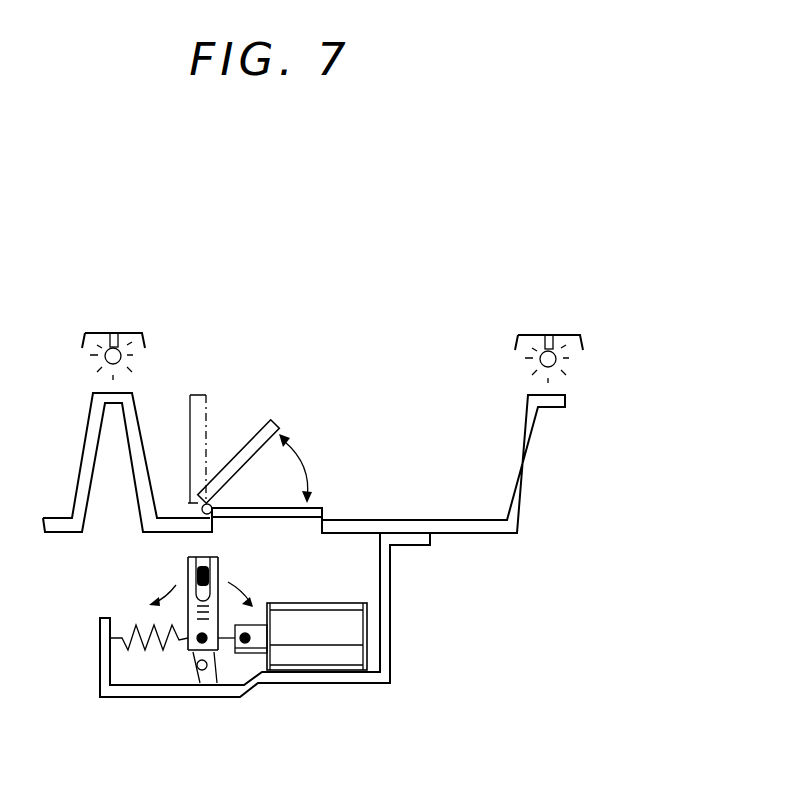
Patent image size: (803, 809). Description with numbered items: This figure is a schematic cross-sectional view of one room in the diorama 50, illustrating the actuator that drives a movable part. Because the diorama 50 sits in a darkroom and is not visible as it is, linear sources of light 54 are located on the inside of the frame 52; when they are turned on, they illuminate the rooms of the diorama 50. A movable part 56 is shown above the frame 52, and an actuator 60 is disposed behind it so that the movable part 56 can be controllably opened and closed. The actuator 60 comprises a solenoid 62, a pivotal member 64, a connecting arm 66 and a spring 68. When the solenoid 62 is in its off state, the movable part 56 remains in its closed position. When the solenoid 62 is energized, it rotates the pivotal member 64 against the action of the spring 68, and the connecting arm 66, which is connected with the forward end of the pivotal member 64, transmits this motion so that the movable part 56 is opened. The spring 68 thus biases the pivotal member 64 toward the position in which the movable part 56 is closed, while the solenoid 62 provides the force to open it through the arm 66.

The diorama 50 is at (549, 260).
The frame 52 is at (132, 333).
The linear sources of light 54 is at (105, 362).
The movable part 56 is at (263, 423).
The actuator 60 is at (388, 660).
The solenoid 62 is at (305, 655).
The pivotal member 64 is at (188, 608).
The connecting arm 66 is at (215, 518).
The spring 68 is at (143, 652).